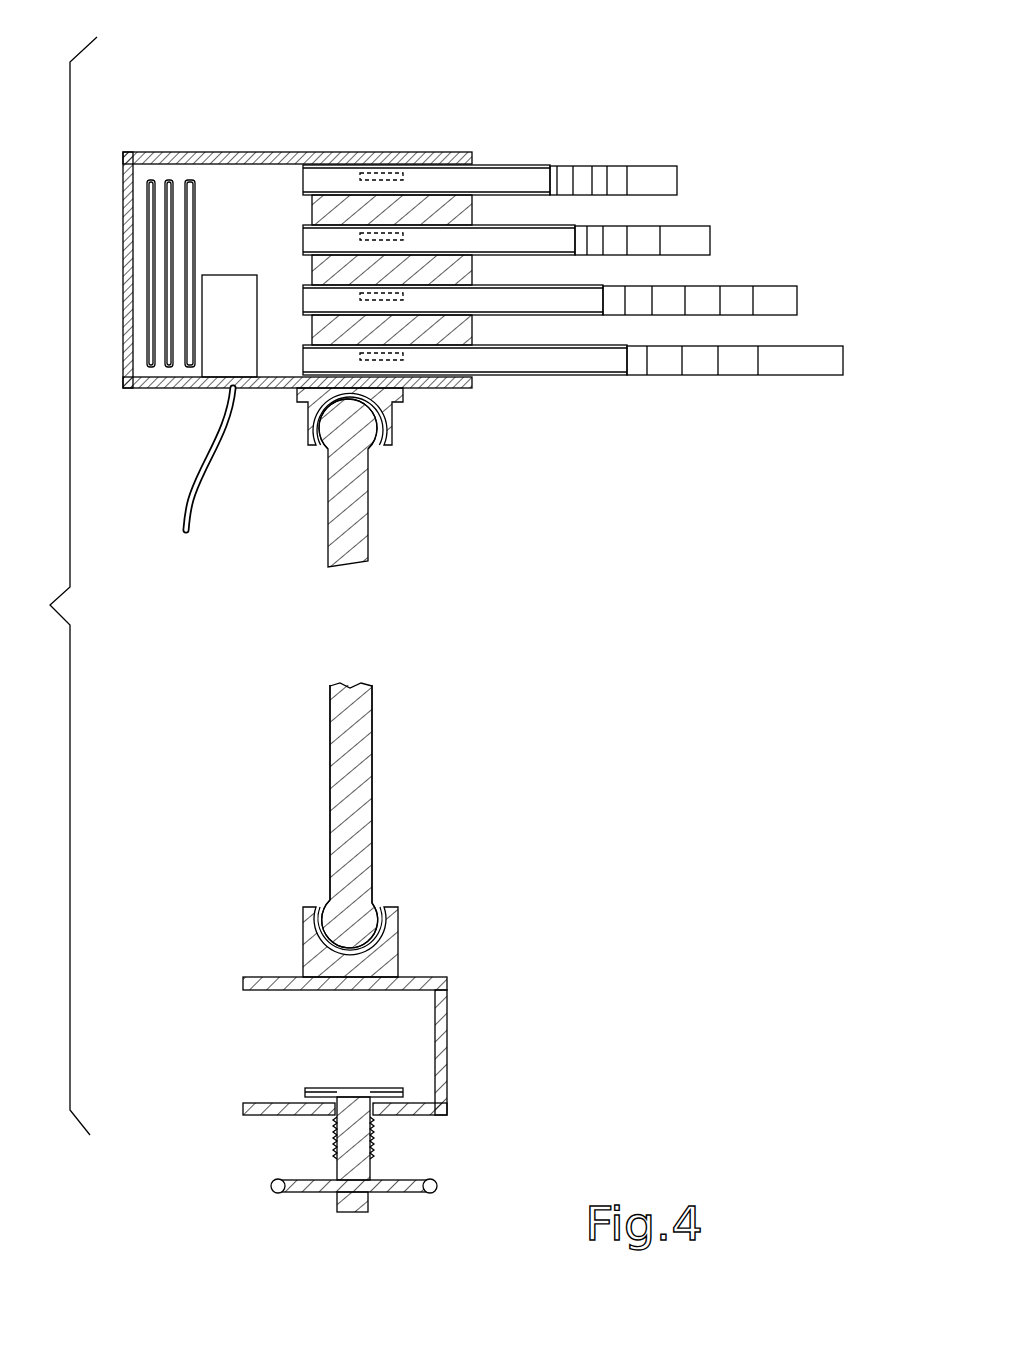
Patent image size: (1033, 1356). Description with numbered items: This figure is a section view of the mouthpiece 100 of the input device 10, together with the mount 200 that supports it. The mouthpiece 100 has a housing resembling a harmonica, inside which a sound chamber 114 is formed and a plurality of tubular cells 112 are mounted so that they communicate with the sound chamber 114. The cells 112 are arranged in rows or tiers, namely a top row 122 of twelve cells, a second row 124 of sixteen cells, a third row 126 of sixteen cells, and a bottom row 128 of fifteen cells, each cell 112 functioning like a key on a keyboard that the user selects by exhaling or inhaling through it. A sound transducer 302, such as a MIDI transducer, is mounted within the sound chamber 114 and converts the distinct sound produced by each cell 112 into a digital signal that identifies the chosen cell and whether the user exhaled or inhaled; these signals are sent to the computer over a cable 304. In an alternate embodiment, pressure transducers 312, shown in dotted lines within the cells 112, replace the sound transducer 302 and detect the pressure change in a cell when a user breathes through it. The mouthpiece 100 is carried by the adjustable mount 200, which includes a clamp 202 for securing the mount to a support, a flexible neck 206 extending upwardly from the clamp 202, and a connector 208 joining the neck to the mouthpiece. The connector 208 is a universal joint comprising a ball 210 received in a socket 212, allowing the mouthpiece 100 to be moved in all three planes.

The input device 10 is at (54, 586).
The mouthpiece 100 is at (270, 113).
The tubular cells 112 is at (498, 166).
The sound chamber 114 is at (253, 234).
The top row 122 is at (685, 173).
The second row 124 is at (720, 242).
The third row 126 is at (805, 298).
The bottom row 128 is at (853, 368).
The mounting system 200 is at (255, 802).
The clamp 202 is at (262, 1050).
The neck 206 is at (363, 730).
The connector 208 is at (392, 468).
The ball 210 is at (370, 440).
The socket 212 is at (313, 438).
The sound transducer 302 is at (252, 337).
The cable 304 is at (198, 472).
The pressure transducers 312 is at (372, 172).